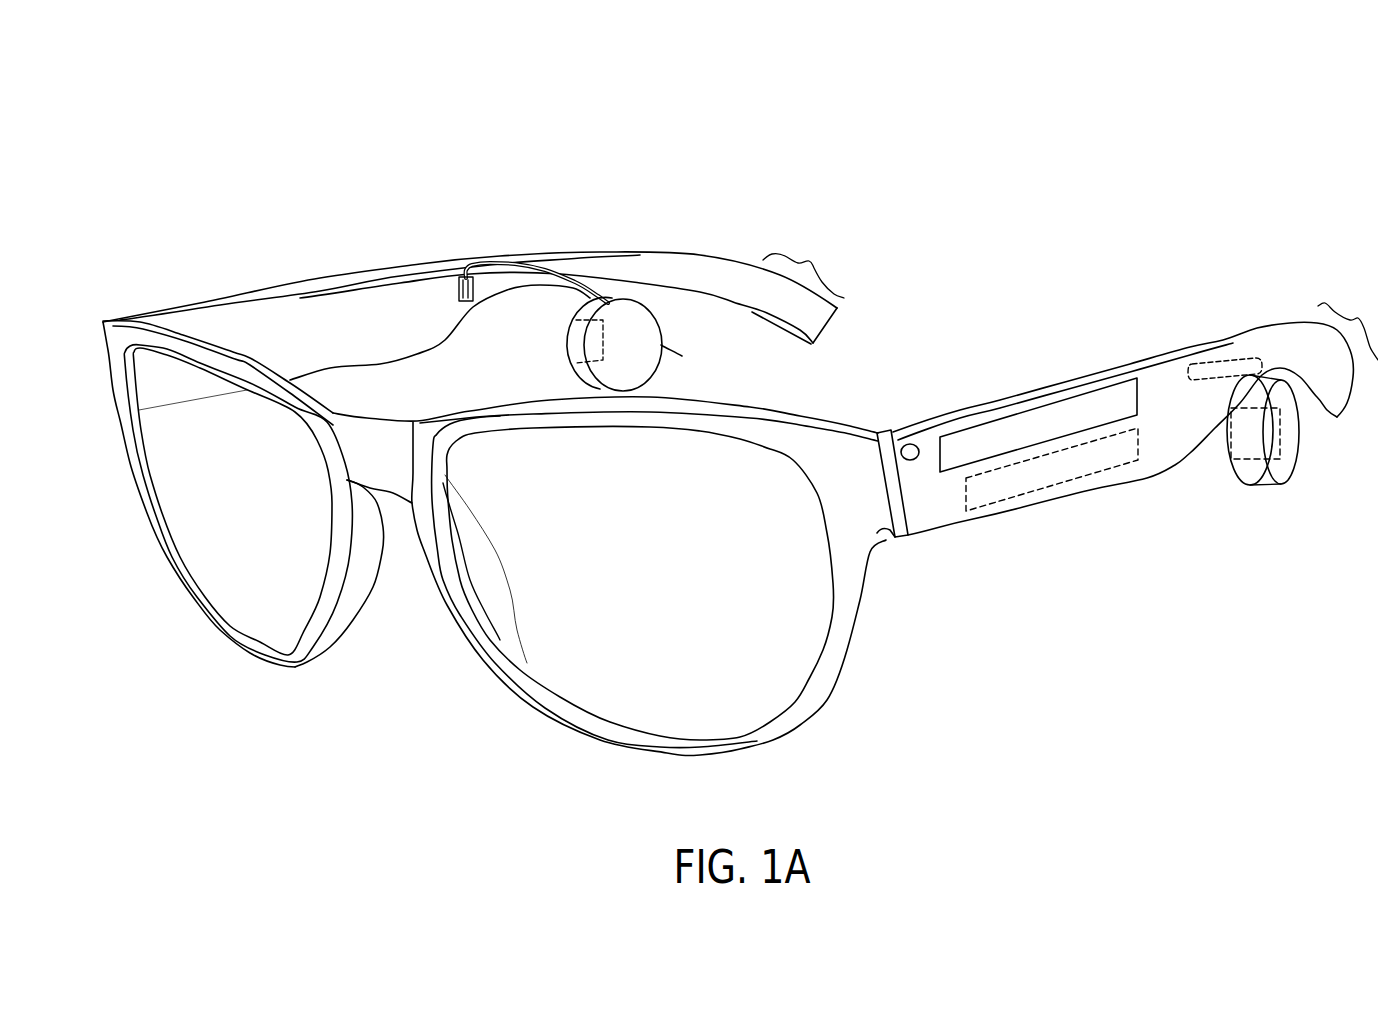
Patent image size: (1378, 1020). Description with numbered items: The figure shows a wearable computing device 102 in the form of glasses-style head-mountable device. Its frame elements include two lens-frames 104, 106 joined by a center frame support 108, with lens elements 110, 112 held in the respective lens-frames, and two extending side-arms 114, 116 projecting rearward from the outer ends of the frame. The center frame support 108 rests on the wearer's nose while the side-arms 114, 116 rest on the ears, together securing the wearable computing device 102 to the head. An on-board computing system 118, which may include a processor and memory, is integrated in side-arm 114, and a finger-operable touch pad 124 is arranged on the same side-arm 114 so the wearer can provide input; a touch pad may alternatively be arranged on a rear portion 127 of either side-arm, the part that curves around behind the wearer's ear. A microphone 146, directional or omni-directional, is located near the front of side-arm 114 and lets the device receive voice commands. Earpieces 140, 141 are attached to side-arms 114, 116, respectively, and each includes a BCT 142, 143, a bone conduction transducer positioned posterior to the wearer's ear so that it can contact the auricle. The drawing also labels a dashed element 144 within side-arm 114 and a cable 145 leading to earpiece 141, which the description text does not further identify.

The wearable computing device 102 is at (1158, 120).
The lens-frame 104 is at (287, 663).
The lens-frame 106 is at (647, 755).
The center frame support 108 is at (387, 435).
The lens element 110 is at (215, 595).
The lens element 112 is at (570, 690).
The extending side-arm 114 is at (1129, 487).
The extending side-arm 116 is at (370, 293).
The on-board computing system 118 is at (1092, 470).
The finger-operable touch pad 124 is at (942, 470).
The rear portion 127 is at (1070, 293).
The earpiece 140 is at (1278, 470).
The earpiece 141 is at (661, 352).
The BCT 142 is at (1264, 455).
The BCT 143 is at (578, 348).
The antenna 144 is at (1217, 336).
The cable 145 is at (558, 270).
The microphone 146 is at (910, 444).